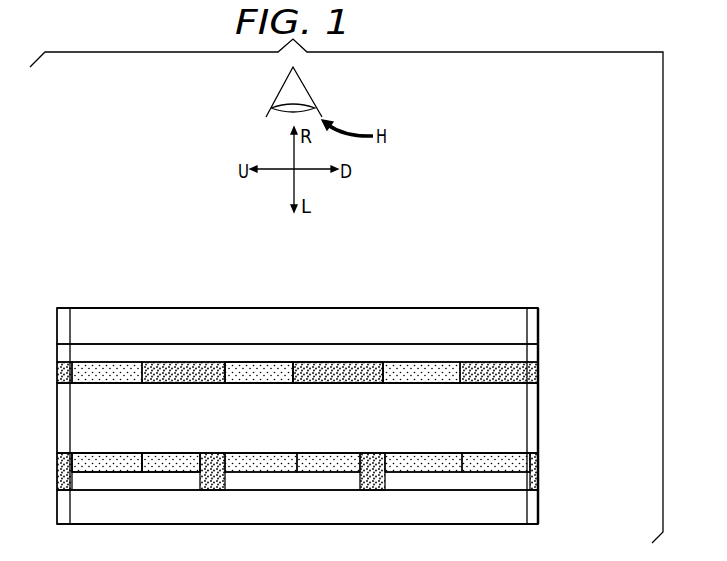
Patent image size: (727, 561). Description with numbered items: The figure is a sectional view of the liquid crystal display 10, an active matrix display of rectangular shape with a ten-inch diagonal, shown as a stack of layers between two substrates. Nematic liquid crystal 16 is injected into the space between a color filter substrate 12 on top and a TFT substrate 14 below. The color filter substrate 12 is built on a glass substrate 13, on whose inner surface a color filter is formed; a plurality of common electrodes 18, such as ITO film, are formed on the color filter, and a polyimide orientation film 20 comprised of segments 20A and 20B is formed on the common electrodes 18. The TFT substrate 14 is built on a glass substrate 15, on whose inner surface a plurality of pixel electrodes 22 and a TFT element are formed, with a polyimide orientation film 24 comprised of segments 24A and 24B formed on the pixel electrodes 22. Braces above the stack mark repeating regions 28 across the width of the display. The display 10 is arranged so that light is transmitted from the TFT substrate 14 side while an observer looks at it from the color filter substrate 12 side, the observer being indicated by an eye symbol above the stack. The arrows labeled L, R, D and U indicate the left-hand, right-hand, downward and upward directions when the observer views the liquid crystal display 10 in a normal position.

The liquid crystal display 10 is at (556, 286).
The color filter substrate 12 is at (602, 293).
The glass substrate 13 is at (512, 323).
The TFT substrate 14 is at (602, 422).
The glass substrate 15 is at (525, 505).
The nematic liquid crystal 16 is at (520, 418).
The common electrodes 18 is at (528, 348).
The polyimide orientation film 20 is at (531, 367).
The segment 20A is at (270, 377).
The segment 20B is at (340, 375).
The pixel electrodes 22 is at (525, 472).
The polyimide orientation film 24 is at (525, 458).
The segment 24A is at (177, 453).
The segment 24B is at (110, 457).
The pixel 28 is at (213, 290).